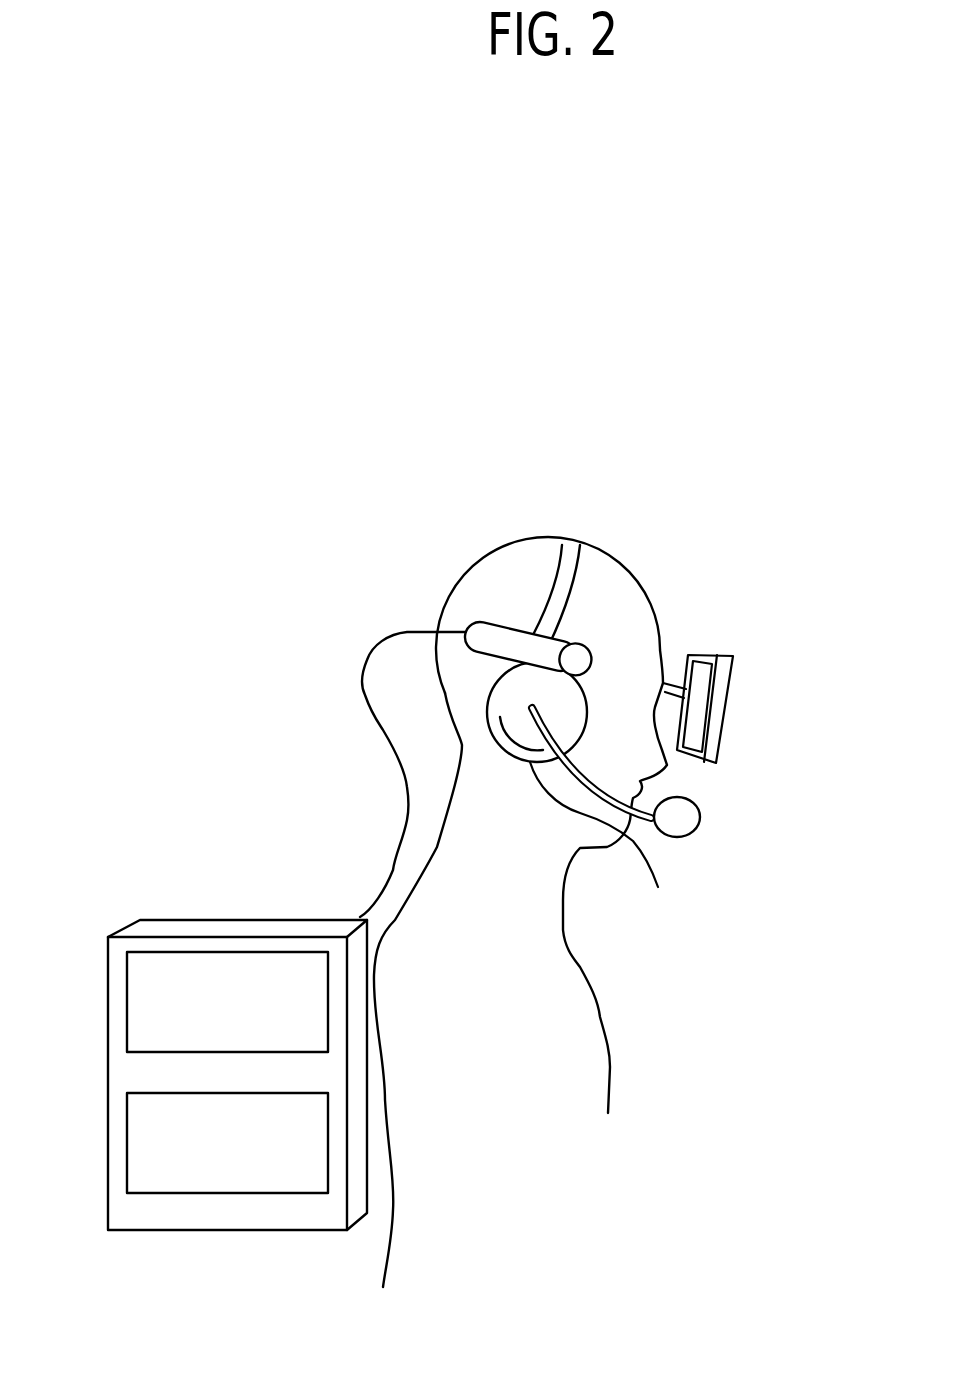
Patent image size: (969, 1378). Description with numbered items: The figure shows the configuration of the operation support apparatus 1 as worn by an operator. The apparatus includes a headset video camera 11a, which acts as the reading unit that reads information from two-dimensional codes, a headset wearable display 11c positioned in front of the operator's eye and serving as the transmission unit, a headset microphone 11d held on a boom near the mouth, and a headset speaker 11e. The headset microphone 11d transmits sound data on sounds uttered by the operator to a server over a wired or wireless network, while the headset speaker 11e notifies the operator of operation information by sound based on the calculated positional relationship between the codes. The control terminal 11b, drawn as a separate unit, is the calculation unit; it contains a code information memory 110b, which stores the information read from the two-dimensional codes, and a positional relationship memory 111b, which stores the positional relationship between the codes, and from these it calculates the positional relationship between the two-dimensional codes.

The operation support apparatus 1 is at (623, 520).
The headset video camera 11a is at (505, 613).
The control terminal 11b is at (292, 1233).
The headset wearable display 11c is at (708, 653).
The headset microphone 11d is at (700, 818).
The headset speaker 11e is at (608, 847).
The code information memory 110b is at (127, 1000).
The positional relationship memory 111b is at (127, 1142).